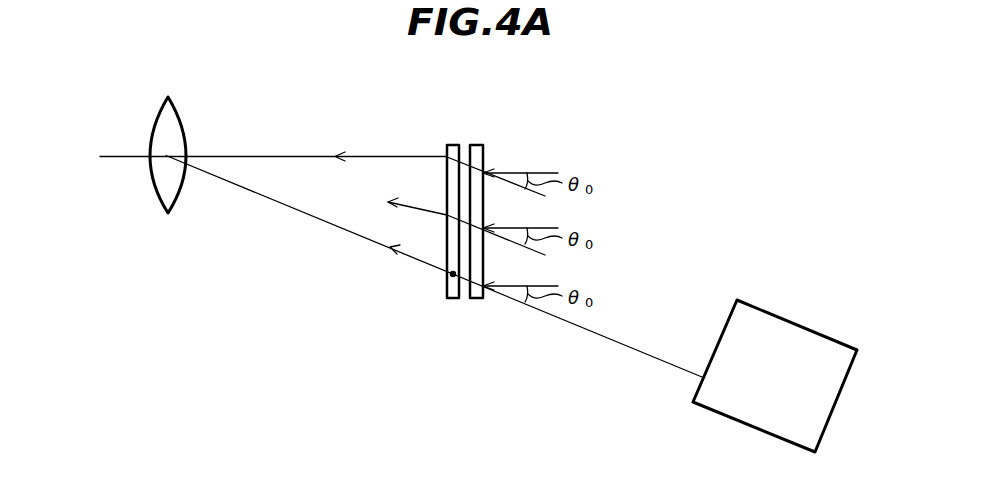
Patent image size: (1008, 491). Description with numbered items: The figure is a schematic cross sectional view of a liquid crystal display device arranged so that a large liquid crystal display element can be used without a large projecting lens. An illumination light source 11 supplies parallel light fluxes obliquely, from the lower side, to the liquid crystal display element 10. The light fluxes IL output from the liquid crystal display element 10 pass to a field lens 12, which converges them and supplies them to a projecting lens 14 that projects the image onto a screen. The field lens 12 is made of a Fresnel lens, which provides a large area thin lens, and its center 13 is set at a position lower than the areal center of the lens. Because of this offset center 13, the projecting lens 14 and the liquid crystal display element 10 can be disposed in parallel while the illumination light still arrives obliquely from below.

The liquid crystal display element 10 is at (476, 145).
The illumination light source 11 is at (793, 322).
The field lens 12 is at (453, 145).
The center of the field lens 13 is at (453, 277).
The projecting lens 14 is at (178, 112).
The light fluxes IL is at (548, 313).